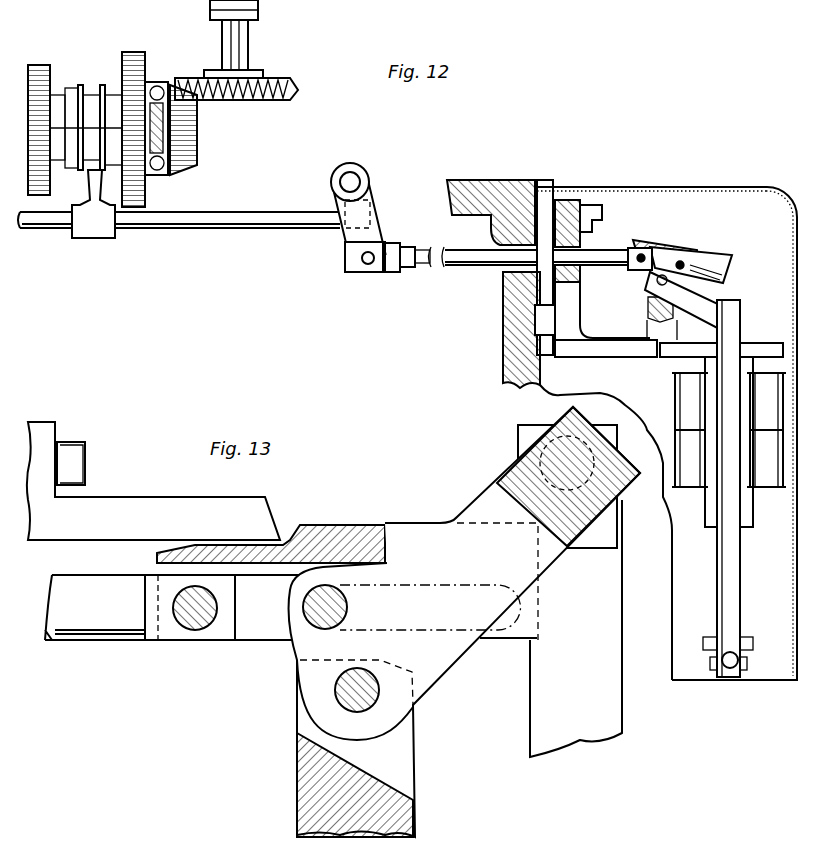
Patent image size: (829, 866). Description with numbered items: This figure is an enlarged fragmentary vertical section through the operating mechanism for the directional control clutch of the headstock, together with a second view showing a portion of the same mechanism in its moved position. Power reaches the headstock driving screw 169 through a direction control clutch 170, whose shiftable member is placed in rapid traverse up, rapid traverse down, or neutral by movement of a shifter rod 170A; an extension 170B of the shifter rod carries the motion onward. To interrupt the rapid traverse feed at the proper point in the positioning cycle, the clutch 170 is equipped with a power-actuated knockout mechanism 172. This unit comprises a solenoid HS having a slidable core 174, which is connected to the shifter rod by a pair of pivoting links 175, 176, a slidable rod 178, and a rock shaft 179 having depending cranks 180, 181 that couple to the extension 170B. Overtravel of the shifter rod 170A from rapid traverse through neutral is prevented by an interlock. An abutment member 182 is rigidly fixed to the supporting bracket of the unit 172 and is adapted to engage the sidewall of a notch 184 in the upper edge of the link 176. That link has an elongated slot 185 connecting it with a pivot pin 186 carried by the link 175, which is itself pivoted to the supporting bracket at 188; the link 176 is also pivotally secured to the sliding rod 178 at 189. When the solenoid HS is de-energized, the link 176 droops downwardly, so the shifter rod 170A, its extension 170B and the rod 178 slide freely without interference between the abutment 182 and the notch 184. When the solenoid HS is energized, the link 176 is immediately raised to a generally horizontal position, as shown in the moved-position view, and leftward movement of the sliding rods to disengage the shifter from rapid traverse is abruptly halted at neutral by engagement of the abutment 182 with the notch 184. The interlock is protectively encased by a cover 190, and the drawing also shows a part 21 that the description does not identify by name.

In FIG. 12, the headstock driving screw 169 is at (262, 22).
In FIG. 12, the direction control clutch 170 is at (92, 64).
In FIG. 12, the shifter rod 170A is at (60, 228).
In FIG. 12, the extension of the shifter rod 170B is at (262, 228).
In FIG. 12, the rock shaft 179 is at (350, 182).
In FIG. 12, the depending crank 181 is at (368, 203).
In FIG. 12, the depending crank 180 is at (360, 257).
In FIG. 12, the slidable rod 178 is at (511, 273).
In FIG. 13, the slidable rod 178 is at (108, 631).
In FIG. 12, the frame support 21 is at (520, 180).
In FIG. 12, the cover 190 is at (653, 186).
In FIG. 12, the power-actuated knockout mechanism 172 is at (724, 203).
In FIG. 12, the abutment member 182 is at (633, 231).
In FIG. 13, the abutment member 182 is at (153, 481).
In FIG. 12, the notch 184 is at (657, 241).
In FIG. 13, the notch 184 is at (284, 538).
In FIG. 12, the pivot pin 186 is at (682, 263).
In FIG. 13, the pivot pin 186 is at (347, 610).
In FIG. 12, the link 176 is at (713, 252).
In FIG. 13, the link 176 is at (412, 532).
In FIG. 12, the elongated slot 185 is at (724, 273).
In FIG. 13, the elongated slot 185 is at (514, 605).
In FIG. 12, the link 175 is at (713, 298).
In FIG. 12, the pivot connection 189 is at (639, 262).
In FIG. 13, the pivot connection 189 is at (198, 628).
In FIG. 12, the pivot 188 is at (656, 281).
In FIG. 13, the pivot 188 is at (368, 708).
In FIG. 12, the solenoid HS is at (683, 392).
In FIG. 12, the slidable core 174 is at (723, 558).
In FIG. 13, the slidable core 174 is at (580, 735).